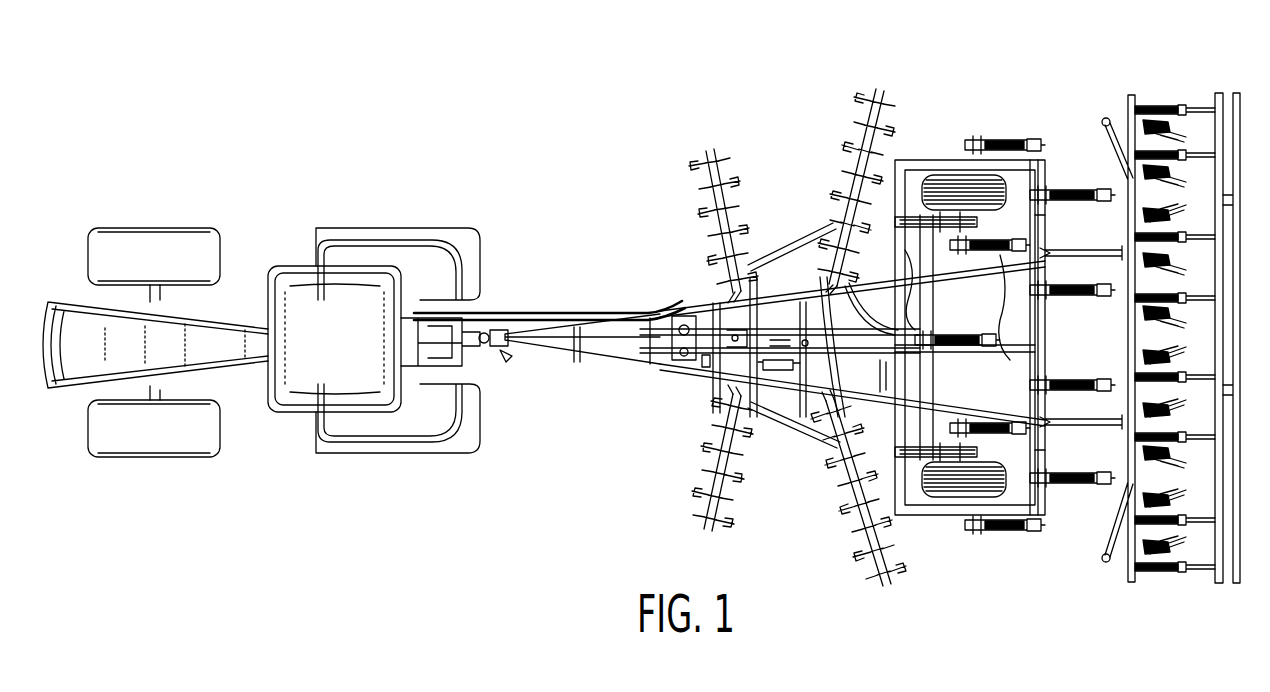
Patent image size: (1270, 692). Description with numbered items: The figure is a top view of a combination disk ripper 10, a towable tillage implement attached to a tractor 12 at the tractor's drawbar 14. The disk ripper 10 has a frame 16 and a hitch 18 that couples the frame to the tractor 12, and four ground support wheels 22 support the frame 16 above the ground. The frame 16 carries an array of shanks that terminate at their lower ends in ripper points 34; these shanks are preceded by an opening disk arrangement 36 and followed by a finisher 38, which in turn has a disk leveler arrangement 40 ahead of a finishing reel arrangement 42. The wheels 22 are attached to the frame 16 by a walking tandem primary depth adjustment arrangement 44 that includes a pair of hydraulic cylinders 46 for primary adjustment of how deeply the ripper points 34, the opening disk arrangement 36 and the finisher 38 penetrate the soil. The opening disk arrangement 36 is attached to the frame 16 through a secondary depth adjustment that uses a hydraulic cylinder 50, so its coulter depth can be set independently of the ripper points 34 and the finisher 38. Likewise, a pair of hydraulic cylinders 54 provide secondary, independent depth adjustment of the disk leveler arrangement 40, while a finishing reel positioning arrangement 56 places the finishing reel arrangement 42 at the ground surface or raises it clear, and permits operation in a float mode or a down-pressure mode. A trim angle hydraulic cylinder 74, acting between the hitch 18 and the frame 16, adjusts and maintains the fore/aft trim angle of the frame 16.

The combination disk ripper 10 is at (757, 74).
The tractor 12 is at (292, 414).
The drawbar 14 is at (470, 315).
The frame 16 is at (702, 386).
The hitch 18 is at (612, 370).
The ground support wheels 22 is at (962, 188).
The ripper points 34 is at (1028, 548).
The opening disk arrangement 36 is at (680, 478).
The finisher 38 is at (1148, 95).
The disk leveler arrangement 40 is at (1152, 586).
The finishing reel arrangement 42 is at (1220, 596).
The walking tandem primary depth adjustment arrangement 44 is at (949, 388).
The hydraulic cylinders 46 is at (928, 228).
The hydraulic cylinder 50 is at (690, 306).
The hydraulic cylinders 54 is at (1065, 250).
The finishing reel positioning arrangement 56 is at (1205, 92).
The trim angle hydraulic cylinder 74 is at (642, 310).